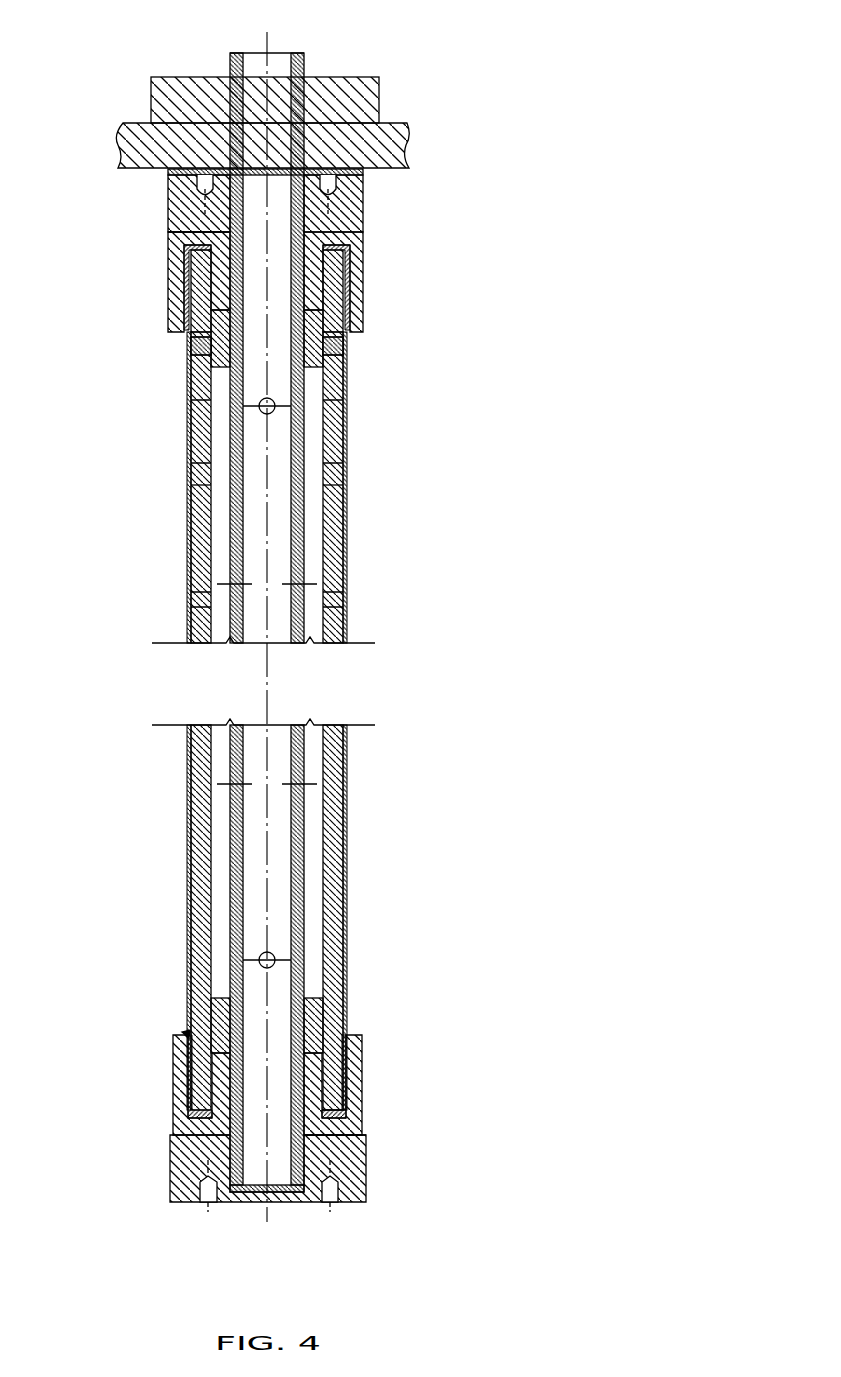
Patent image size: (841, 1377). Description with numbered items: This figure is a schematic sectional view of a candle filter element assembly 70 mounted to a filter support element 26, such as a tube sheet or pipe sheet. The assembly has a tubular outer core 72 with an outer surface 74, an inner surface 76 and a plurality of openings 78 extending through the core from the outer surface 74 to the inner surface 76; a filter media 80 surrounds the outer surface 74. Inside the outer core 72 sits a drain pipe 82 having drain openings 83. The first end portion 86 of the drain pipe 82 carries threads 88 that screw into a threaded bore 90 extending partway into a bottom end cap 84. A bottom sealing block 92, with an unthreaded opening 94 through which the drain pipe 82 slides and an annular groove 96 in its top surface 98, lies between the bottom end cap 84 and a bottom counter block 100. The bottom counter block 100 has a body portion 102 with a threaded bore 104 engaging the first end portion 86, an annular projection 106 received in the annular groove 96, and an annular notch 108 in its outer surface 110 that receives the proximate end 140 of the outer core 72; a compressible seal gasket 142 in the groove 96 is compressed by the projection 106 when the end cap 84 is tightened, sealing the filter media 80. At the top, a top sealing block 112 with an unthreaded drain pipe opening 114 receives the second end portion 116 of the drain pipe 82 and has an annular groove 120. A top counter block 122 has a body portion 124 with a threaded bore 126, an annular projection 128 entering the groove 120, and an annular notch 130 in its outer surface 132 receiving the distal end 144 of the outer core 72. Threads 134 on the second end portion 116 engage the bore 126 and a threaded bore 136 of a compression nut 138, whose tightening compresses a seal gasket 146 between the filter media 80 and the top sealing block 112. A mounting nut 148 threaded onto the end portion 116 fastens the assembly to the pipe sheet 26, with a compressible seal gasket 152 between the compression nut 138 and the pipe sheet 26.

The candle filter element assembly 70 is at (509, 78).
The drain pipe 82 is at (279, 46).
The filter support element 26 is at (126, 157).
The mounting nut 148 is at (362, 92).
The compressible seal gasket 152 is at (166, 176).
The threads 134 is at (229, 66).
The bottom counter block 100 is at (231, 92).
The compression nut 138 is at (229, 199).
The threaded bore 136 is at (226, 221).
The second end portion 116 is at (307, 212).
The unthreaded drain pipe opening 114 is at (336, 235).
The top sealing block 112 is at (361, 234).
The compressible seal gasket 146 is at (186, 250).
The annular groove 120 is at (183, 300).
The annular projection 128 is at (187, 316).
The outer surface 132 is at (214, 352).
The distal end 144 is at (122, 421).
The openings 78 is at (190, 384).
The filter media 80 is at (190, 428).
The tubular outer core 72 is at (190, 457).
The outer surface 74 is at (196, 490).
The inner surface 76 is at (212, 519).
The top counter block 122 is at (351, 348).
The annular notch 130 is at (331, 366).
The body portion 124 is at (330, 398).
The threaded bore 126 is at (345, 425).
The drain openings 83 is at (275, 414).
The proximate end 140 is at (172, 960).
The annular notch 108 is at (209, 996).
The threaded bore 104 is at (310, 992).
The body portion 102 is at (344, 958).
The outer surface 110 is at (186, 1014).
The top surface 98 is at (346, 1016).
The bottom sealing block 92 is at (173, 1123).
The annular groove 96 is at (364, 1050).
The unthreaded opening 94 is at (190, 1067).
The annular projection 106 is at (341, 1086).
The compressible seal gasket 142 is at (350, 1116).
The bottom end cap 84 is at (367, 1175).
The first end portion 86 is at (309, 1152).
The threads 88 is at (250, 1193).
The threaded bore 90 is at (312, 1193).